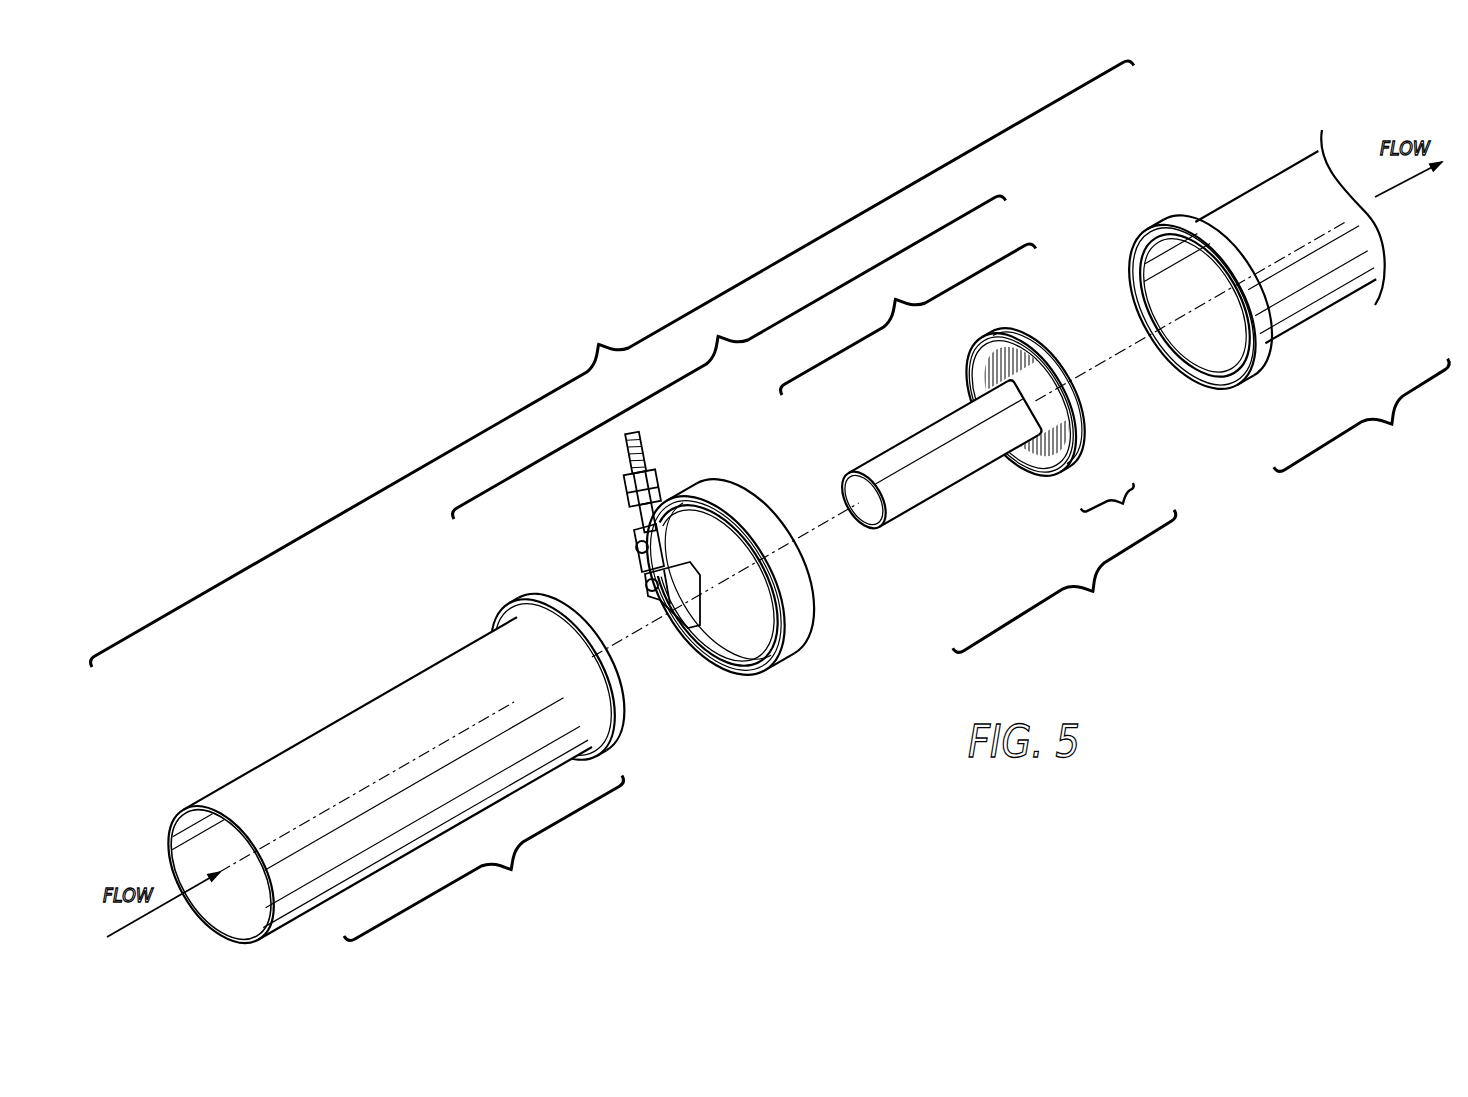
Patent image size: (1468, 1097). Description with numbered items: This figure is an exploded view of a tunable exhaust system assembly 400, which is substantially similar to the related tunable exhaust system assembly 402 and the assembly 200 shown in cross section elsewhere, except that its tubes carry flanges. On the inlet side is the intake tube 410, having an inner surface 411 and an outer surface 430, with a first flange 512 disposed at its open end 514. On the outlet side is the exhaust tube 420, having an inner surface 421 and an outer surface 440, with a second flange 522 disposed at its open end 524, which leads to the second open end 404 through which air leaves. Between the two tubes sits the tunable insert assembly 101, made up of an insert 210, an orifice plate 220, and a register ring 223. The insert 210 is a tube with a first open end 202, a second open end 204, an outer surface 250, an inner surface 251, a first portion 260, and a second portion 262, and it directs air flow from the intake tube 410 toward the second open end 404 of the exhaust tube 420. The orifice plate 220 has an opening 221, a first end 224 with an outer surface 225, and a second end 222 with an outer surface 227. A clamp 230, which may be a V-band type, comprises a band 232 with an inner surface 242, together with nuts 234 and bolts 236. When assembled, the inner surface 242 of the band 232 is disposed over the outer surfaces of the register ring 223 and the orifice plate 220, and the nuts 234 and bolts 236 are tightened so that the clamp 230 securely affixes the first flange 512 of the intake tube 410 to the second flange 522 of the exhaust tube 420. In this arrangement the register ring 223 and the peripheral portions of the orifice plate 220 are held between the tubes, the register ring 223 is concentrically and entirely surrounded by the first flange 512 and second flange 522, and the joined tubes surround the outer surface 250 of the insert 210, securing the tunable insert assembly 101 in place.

The tunable insert assembly 101 is at (1070, 590).
The assembly 200 is at (723, 348).
The first open end 202 is at (872, 508).
The second open end 204 is at (1083, 380).
The insert 210 is at (923, 492).
The orifice plate 220 is at (1046, 411).
The opening 221 is at (1013, 367).
The second end 222 is at (1087, 408).
The register ring 223 is at (1093, 440).
The first end 224 is at (1050, 470).
The outer surface of the first end 225 is at (980, 375).
The outer surface of the second end 227 is at (1070, 348).
The clamp 230 is at (696, 591).
The band 232 is at (710, 486).
The nut 234 is at (637, 512).
The bolt 236 is at (637, 540).
The inner surface 242 is at (703, 620).
The outer surface 250 is at (973, 458).
The inner surface 251 is at (850, 490).
The first portion 260 is at (902, 310).
The second portion 262 is at (1117, 510).
The tunable exhaust system assembly 400 is at (606, 355).
The tunable exhaust system assembly 402 is at (200, 851).
The second open end 404 is at (1345, 183).
The intake tube 410 is at (489, 867).
The inner surface 411 is at (232, 904).
The exhaust tube 420 is at (1368, 424).
The inner surface 421 is at (1228, 333).
The outer surface 430 is at (351, 789).
The outer surface 440 is at (1259, 236).
The first flange 512 is at (558, 668).
The open end 514 is at (548, 740).
The second flange 522 is at (1224, 302).
The open end 524 is at (1275, 313).